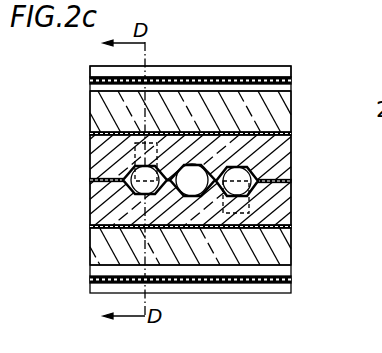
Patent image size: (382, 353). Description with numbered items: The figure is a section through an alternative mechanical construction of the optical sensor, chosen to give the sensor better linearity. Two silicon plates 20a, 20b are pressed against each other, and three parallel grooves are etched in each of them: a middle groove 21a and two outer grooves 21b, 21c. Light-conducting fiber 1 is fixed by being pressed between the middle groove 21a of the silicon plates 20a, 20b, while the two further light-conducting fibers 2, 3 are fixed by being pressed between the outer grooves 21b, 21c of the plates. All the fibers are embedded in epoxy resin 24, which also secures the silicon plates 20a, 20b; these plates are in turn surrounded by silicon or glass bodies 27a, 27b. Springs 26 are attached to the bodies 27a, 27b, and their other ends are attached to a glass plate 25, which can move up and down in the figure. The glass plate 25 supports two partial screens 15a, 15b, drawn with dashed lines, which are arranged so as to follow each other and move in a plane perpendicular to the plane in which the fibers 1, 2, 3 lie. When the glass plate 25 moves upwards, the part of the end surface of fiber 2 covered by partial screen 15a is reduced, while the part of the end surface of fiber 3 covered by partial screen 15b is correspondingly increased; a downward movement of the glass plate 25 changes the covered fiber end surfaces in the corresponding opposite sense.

The light-conducting fiber 1 is at (196, 176).
The light-conducting fiber 2 is at (134, 172).
The light-conducting fiber 3 is at (243, 173).
The partial screen 15a is at (137, 153).
The partial screen 15b is at (248, 211).
The silicon plate 20a is at (278, 152).
The silicon plate 20b is at (277, 197).
The middle groove 21a is at (118, 226).
The outer groove 21b is at (132, 193).
The outer groove 21c is at (210, 197).
The epoxy resin 24 is at (107, 181).
The glass plate 25 is at (262, 72).
The springs 26 is at (90, 80).
The silicon or glass body 27a is at (288, 111).
The silicon or glass body 27b is at (278, 257).